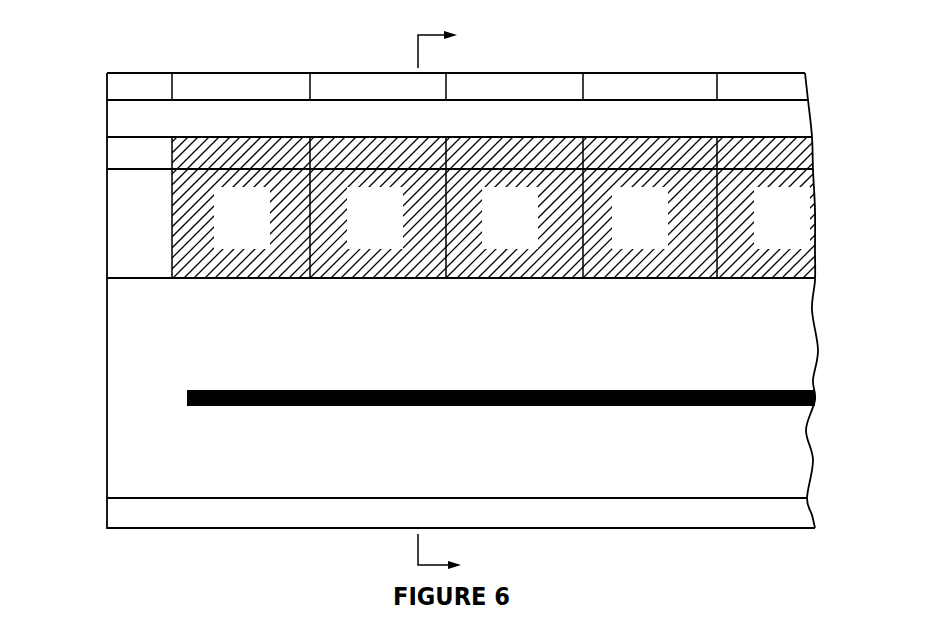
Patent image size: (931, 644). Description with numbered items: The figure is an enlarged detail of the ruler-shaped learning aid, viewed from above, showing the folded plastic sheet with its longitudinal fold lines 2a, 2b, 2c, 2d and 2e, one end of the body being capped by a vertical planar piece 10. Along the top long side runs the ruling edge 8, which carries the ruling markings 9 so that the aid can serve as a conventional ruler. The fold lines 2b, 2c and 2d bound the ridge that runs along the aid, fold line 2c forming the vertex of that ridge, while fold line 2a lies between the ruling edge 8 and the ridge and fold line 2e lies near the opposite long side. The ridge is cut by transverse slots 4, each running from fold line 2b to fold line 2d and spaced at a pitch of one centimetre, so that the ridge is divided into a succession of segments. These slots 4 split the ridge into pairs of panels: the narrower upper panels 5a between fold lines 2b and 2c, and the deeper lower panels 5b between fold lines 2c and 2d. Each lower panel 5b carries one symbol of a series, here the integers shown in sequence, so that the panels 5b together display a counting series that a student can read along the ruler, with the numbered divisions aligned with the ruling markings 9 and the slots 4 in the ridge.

The fold line 2a is at (790, 100).
The fold line 2b is at (795, 136).
The fold line 2c is at (795, 168).
The fold line 2d is at (788, 278).
The fold line 2e is at (782, 497).
The slot 4 is at (173, 152).
The panel 5a is at (235, 150).
The panel 5b is at (202, 250).
The ruling edge 8 is at (525, 72).
The ruling markings 9 is at (595, 123).
The vertical planar piece 10 is at (100, 458).